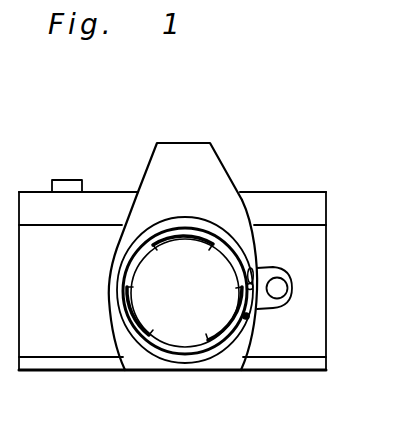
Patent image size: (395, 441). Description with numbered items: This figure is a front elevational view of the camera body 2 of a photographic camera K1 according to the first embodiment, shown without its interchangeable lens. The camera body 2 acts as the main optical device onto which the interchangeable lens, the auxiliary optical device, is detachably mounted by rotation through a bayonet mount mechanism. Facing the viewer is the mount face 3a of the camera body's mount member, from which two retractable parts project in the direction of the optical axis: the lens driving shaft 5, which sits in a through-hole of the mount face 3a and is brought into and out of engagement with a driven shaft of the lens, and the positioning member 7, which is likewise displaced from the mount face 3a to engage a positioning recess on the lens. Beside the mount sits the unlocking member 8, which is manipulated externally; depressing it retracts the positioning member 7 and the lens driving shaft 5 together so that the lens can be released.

The photographic camera K1 is at (268, 160).
The camera body 2 is at (120, 188).
The mount face 3a is at (202, 223).
The lens driving shaft 5 is at (246, 321).
The positioning member 7 is at (253, 271).
The unlocking member 8 is at (277, 290).